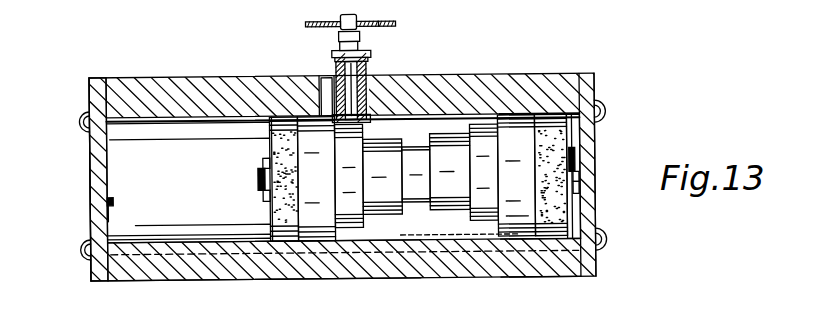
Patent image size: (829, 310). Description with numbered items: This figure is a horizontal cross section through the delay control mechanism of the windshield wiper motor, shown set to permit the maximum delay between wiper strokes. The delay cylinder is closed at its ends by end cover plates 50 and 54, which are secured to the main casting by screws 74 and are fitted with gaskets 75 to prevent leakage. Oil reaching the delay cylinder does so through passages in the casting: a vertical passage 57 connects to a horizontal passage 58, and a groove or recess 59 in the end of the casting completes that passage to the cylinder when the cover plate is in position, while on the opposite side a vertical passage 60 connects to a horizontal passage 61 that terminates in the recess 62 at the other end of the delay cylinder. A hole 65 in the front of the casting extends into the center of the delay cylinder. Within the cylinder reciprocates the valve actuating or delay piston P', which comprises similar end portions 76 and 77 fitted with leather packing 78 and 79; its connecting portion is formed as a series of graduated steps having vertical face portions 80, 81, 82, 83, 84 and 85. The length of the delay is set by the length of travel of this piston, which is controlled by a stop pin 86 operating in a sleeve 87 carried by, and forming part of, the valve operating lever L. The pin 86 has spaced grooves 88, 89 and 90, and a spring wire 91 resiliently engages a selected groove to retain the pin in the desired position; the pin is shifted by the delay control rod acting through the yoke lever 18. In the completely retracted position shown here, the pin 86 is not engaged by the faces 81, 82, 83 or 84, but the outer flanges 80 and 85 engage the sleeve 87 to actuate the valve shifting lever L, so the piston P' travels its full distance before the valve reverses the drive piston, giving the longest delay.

The end cover plate 50 is at (597, 136).
The end cover plate 54 is at (90, 178).
The screws 74 is at (85, 118).
The gaskets 75 is at (88, 153).
The recess 62 is at (107, 206).
The horizontal passage 61 is at (157, 262).
The vertical passage 60 is at (232, 264).
The vertical passage 57 is at (430, 258).
The horizontal passage 58 is at (551, 262).
The hole 65 is at (322, 113).
The groove 88 is at (343, 39).
The yoke lever 18 is at (372, 21).
The groove 89 is at (342, 52).
The valve operating lever L is at (362, 48).
The spring wire 91 is at (372, 58).
The groove 90 is at (334, 70).
The stop pin 86 is at (369, 100).
The sleeve 87 is at (370, 122).
The leather packing 78 is at (288, 218).
The end portion 76 is at (326, 211).
The vertical face portion 80 is at (346, 223).
The vertical face portion 81 is at (376, 219).
The vertical face portion 82 is at (413, 210).
The vertical face portion 83 is at (430, 147).
The vertical face portion 84 is at (470, 133).
The delay piston P' is at (514, 261).
The vertical face portion 85 is at (527, 135).
The end portion 77 is at (562, 135).
The groove or recess 59 is at (578, 201).
The leather packing 79 is at (565, 118).